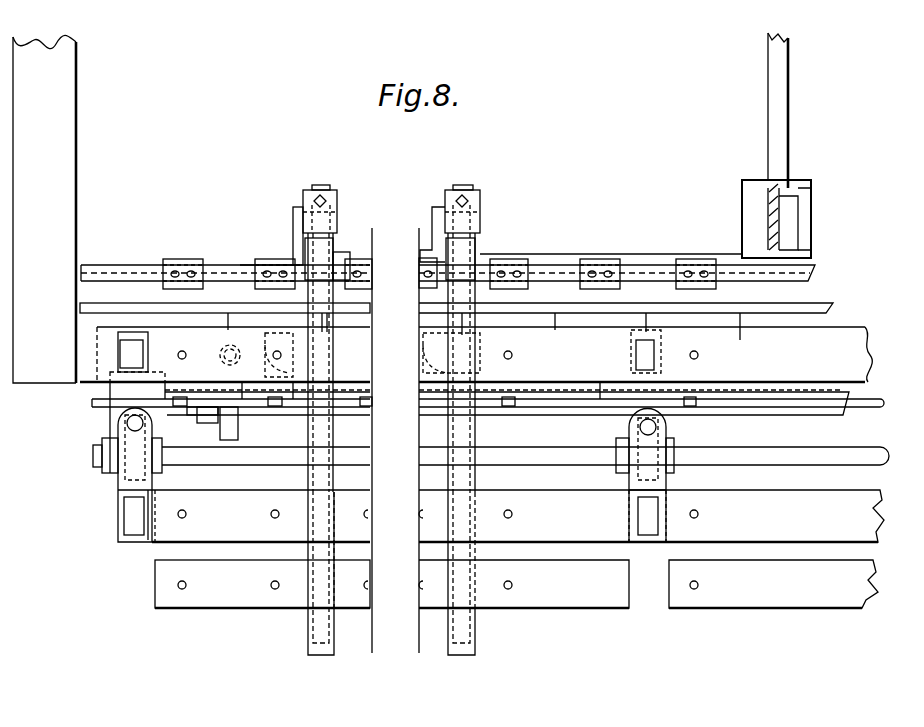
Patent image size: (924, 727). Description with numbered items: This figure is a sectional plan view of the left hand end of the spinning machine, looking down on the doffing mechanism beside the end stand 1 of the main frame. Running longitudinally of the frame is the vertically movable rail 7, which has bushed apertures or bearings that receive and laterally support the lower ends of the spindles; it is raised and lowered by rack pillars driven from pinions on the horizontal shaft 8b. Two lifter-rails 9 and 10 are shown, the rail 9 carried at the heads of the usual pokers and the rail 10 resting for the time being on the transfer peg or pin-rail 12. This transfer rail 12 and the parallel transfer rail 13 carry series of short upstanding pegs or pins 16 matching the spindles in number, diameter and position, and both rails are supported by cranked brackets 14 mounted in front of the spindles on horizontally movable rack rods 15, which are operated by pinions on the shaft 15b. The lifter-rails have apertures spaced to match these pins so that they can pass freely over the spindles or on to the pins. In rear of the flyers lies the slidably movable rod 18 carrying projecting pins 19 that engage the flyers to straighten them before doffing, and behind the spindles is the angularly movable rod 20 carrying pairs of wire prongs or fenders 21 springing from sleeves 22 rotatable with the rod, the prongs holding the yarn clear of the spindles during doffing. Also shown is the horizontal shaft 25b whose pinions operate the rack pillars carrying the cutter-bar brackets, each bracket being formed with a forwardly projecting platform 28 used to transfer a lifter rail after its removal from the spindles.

The end stand 1 is at (40, 218).
The vertically movable rail 7 is at (867, 354).
The horizontal shaft 8b is at (790, 397).
The lifter-rail 9 is at (190, 540).
The lifter-rail 10 is at (472, 354).
The transfer peg or pin-rail 12 is at (723, 420).
The transfer peg or pin-rail 13 is at (516, 584).
The cranked brackets 14 is at (320, 637).
The rack rods 15 is at (485, 432).
The shaft 15b is at (731, 258).
The pegs or pins 16 is at (270, 514).
The slidably movable rod 18 is at (92, 309).
The projecting pins 19 is at (228, 327).
The angularly movable rod 20 is at (113, 272).
The wire prongs or fenders 21 is at (190, 268).
The sleeves 22 is at (257, 262).
The horizontal shaft 25b is at (795, 458).
The platform 28 is at (125, 508).